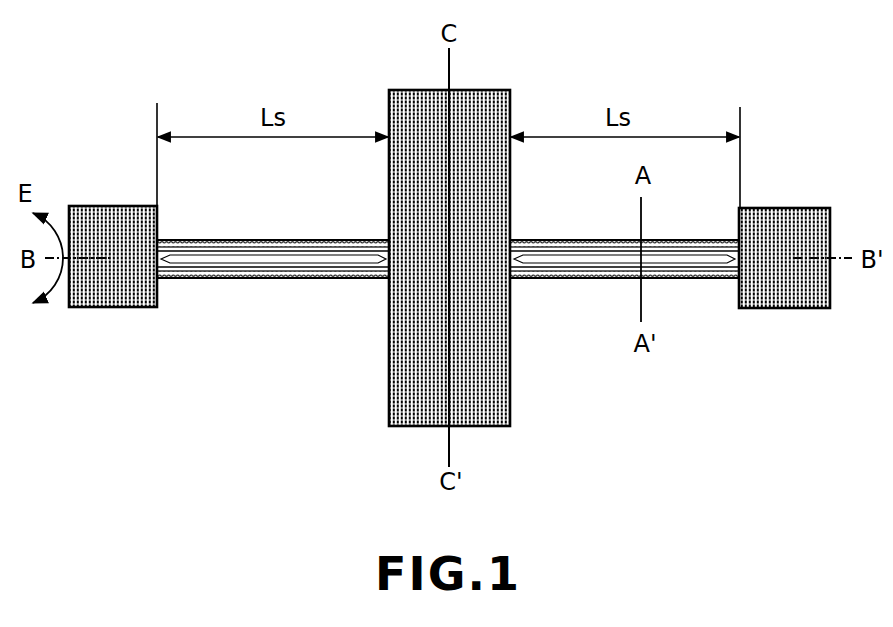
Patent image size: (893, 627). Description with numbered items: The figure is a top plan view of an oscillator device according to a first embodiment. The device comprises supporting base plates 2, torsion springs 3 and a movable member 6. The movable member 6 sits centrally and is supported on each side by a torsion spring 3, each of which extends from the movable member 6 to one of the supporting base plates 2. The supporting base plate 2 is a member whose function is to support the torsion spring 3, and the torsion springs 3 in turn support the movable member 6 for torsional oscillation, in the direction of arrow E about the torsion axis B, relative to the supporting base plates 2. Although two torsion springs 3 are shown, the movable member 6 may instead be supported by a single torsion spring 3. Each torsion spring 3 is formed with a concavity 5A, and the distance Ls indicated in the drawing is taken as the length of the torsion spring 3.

The supporting base plate 2 is at (113, 293).
The torsion spring 3 is at (280, 276).
The concavity 5A is at (288, 255).
The movable member 6 is at (495, 377).